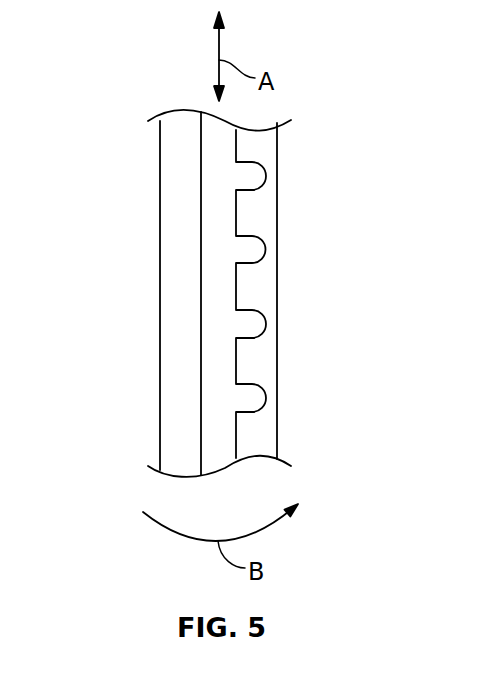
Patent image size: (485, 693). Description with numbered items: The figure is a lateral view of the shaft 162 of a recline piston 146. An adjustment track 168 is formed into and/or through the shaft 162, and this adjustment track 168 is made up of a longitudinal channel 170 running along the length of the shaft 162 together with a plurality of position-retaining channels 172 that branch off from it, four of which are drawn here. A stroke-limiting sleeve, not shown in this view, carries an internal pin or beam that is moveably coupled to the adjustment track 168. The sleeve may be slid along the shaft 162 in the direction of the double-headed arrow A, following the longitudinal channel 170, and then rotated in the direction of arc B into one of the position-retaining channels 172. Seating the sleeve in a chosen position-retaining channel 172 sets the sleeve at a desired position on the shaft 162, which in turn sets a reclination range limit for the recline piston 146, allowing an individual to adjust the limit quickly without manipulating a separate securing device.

The recline piston 146 is at (305, 206).
The shaft 162 is at (122, 336).
The adjustment track 168 is at (214, 182).
The longitudinal channel 170 is at (201, 399).
The position-retaining channels 172 is at (266, 176).